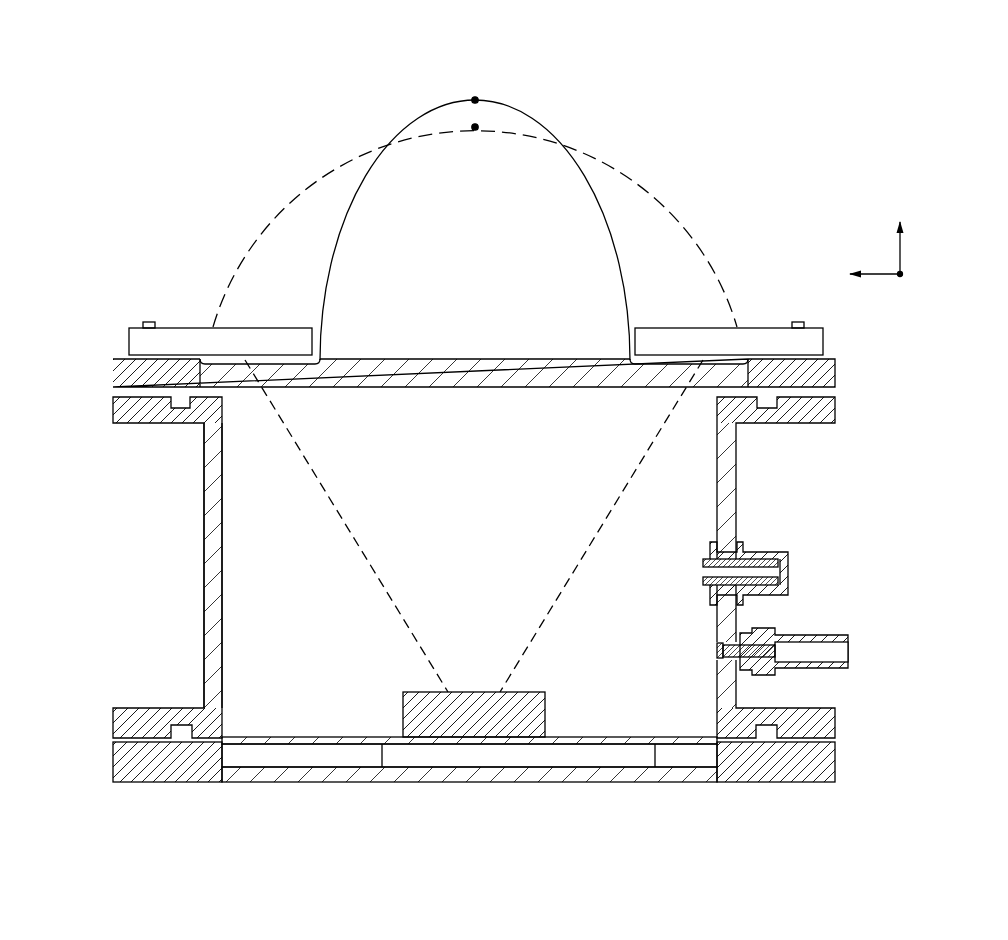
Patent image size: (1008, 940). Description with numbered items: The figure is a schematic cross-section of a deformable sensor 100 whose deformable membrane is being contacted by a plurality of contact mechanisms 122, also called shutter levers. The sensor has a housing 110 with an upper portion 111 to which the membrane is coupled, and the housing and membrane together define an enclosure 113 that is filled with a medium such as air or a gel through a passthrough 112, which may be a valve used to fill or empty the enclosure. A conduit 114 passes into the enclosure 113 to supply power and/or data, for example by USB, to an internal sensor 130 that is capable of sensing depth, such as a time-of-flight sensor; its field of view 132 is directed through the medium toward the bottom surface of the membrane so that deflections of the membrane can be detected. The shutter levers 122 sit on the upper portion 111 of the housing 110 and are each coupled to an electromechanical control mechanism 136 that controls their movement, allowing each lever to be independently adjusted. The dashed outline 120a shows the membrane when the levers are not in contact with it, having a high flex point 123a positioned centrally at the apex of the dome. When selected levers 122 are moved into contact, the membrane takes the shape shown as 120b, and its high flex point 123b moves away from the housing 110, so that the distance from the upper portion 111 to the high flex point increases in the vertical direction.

The deformable sensor 100 is at (175, 120).
The housing 110 is at (421, 560).
The upper portion of the housing 111 is at (114, 360).
The passthrough 112 is at (777, 531).
The enclosure 113 is at (233, 558).
The conduit 114 is at (835, 620).
The deformable membrane (uncontacted state) 120a is at (686, 221).
The deformable membrane (contacted state) 120b is at (524, 106).
The contact mechanisms (shutter levers) 122 is at (258, 328).
The high flex point of deformable membrane 120a 123a is at (477, 133).
The high flex point of deformable membrane 120b 123b is at (471, 96).
The internal sensor 130 is at (545, 718).
The field of view 132 is at (372, 556).
The electromechanical control mechanism 136 is at (147, 321).